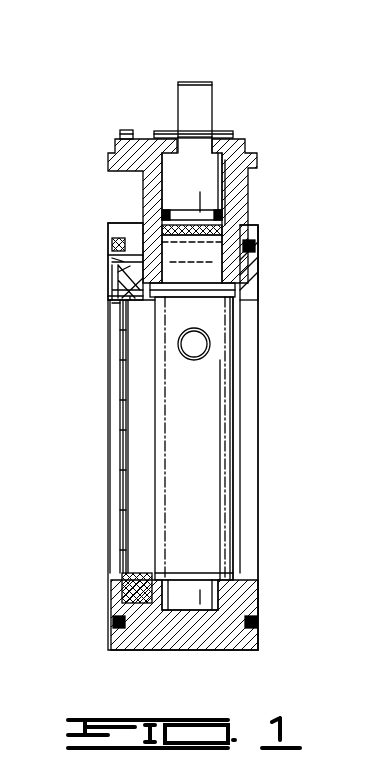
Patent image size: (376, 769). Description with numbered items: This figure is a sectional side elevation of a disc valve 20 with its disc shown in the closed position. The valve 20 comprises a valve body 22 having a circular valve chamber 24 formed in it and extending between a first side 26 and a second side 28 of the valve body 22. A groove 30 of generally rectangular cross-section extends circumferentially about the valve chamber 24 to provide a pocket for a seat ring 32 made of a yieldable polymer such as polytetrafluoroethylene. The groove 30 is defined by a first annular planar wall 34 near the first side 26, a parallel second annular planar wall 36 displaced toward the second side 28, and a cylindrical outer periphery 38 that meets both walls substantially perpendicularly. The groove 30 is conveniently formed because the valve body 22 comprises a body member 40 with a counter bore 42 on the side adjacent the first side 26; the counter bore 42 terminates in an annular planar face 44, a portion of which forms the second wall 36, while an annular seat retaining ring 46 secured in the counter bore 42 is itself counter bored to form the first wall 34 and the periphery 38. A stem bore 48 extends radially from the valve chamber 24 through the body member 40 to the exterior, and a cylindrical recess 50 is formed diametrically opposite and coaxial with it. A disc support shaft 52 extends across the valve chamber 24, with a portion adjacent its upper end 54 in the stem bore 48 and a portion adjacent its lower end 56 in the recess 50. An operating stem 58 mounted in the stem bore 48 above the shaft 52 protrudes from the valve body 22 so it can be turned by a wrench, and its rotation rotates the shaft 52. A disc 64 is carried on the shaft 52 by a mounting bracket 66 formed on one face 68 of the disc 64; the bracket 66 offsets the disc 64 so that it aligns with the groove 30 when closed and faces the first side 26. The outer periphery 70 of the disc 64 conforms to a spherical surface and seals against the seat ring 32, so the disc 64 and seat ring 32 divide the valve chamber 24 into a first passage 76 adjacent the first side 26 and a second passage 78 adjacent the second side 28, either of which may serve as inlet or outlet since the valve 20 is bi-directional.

The disc valve 20 is at (240, 76).
The valve body 22 is at (248, 190).
The valve chamber 24 is at (246, 333).
The first side 26 is at (110, 227).
The second side 28 is at (258, 232).
The groove 30 is at (110, 264).
The seat ring 32 is at (115, 302).
The first annular planar wall 34 is at (118, 582).
The second annular planar wall 36 is at (115, 604).
The cylindrical outer periphery 38 is at (117, 282).
The body member 40 is at (233, 181).
The counter bore 42 is at (112, 252).
The annular planar face 44 is at (137, 250).
The seat retaining ring 46 is at (118, 287).
The stem bore 48 is at (222, 282).
The cylindrical recess 50 is at (212, 594).
The disc support shaft 52 is at (235, 296).
The upper end 54 is at (222, 262).
The lower end 56 is at (208, 605).
The operating stem 58 is at (202, 172).
The disc 64 is at (110, 445).
The mounting bracket 66 is at (210, 420).
The face 68 is at (158, 494).
The outer periphery 70 is at (140, 407).
The first passage 76 is at (112, 474).
The second passage 78 is at (245, 497).